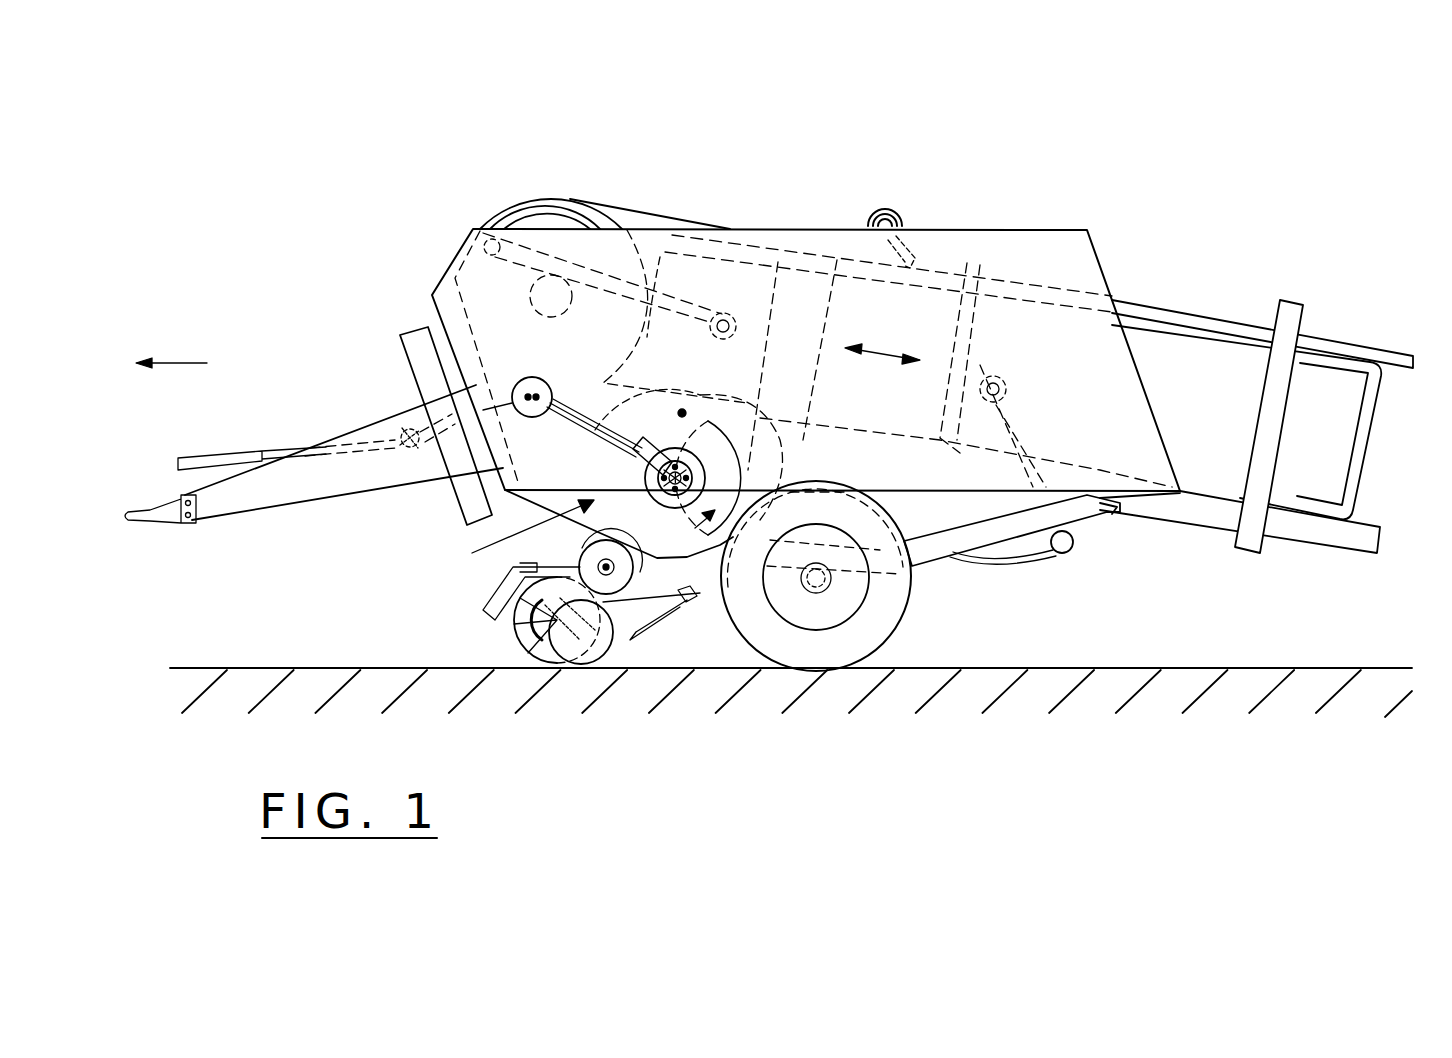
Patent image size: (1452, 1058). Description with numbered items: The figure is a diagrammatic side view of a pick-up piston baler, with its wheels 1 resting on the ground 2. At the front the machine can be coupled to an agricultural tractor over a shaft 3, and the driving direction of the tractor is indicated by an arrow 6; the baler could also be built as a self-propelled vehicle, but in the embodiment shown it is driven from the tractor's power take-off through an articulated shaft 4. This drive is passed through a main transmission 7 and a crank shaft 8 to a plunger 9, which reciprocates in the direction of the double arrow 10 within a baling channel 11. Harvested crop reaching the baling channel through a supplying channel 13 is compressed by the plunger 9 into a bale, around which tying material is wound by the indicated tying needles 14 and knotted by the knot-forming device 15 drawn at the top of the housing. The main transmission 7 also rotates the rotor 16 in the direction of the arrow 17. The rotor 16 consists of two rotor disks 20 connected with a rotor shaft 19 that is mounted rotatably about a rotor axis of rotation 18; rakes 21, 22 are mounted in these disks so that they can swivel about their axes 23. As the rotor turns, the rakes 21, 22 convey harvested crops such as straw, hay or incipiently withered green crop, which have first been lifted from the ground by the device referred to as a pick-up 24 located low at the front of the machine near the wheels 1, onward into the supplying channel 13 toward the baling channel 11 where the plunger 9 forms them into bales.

The ground wheels 1 is at (588, 668).
The ground 2 is at (1122, 668).
The shaft 3 is at (268, 512).
The articulated shaft 4 is at (223, 452).
The arrow 6 is at (178, 362).
The main transmission 7 is at (487, 353).
The crank shaft 8 is at (595, 280).
The plunger 9 is at (700, 273).
The double arrow 10 is at (880, 355).
The baling channel 11 is at (848, 333).
The supplying channel 13 is at (783, 473).
The tying needles 14 is at (1018, 558).
The knot-forming device 15 is at (900, 218).
The rotor 16 is at (510, 541).
The arrow 17 is at (762, 497).
The rotor axis of rotation 18 is at (603, 477).
The rotor shaft 19 is at (690, 430).
The rotor disks 20 is at (660, 531).
The rake 21 is at (655, 435).
The rake 22 is at (771, 450).
The axes 23 is at (536, 388).
The pick-up 24 is at (528, 626).